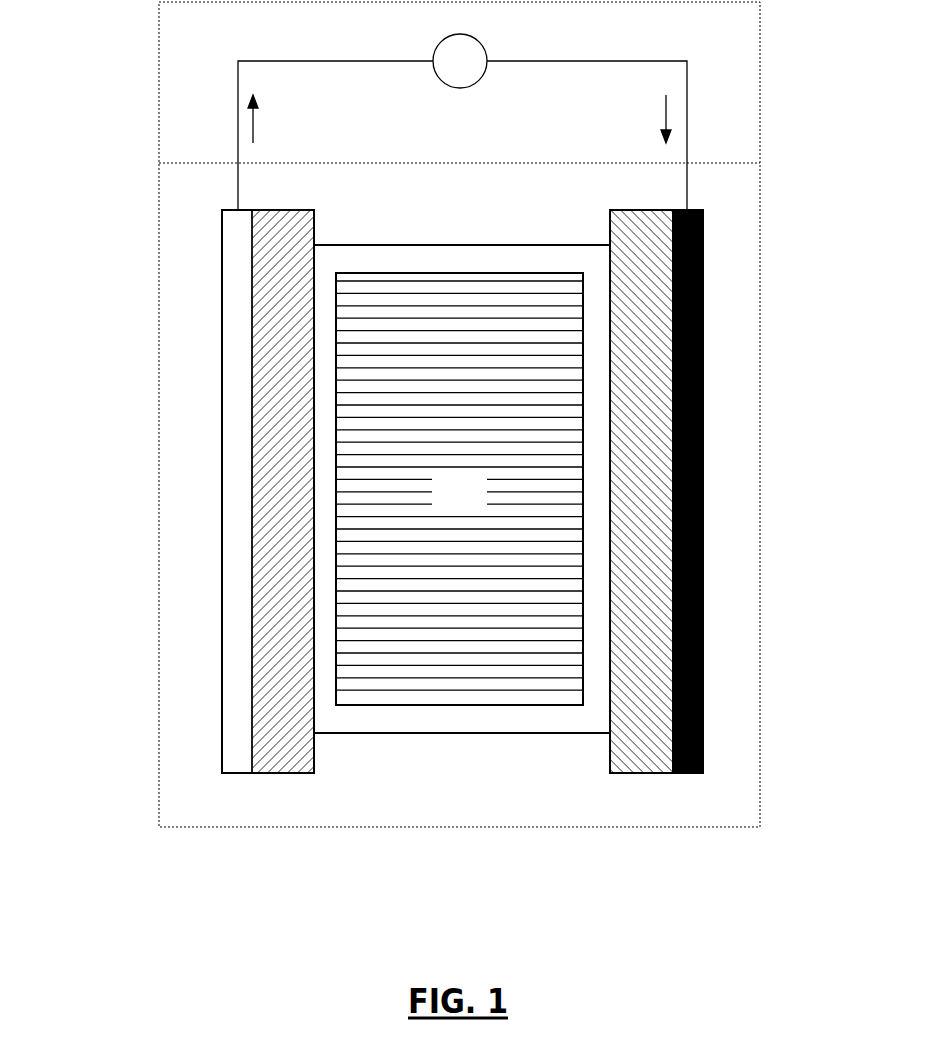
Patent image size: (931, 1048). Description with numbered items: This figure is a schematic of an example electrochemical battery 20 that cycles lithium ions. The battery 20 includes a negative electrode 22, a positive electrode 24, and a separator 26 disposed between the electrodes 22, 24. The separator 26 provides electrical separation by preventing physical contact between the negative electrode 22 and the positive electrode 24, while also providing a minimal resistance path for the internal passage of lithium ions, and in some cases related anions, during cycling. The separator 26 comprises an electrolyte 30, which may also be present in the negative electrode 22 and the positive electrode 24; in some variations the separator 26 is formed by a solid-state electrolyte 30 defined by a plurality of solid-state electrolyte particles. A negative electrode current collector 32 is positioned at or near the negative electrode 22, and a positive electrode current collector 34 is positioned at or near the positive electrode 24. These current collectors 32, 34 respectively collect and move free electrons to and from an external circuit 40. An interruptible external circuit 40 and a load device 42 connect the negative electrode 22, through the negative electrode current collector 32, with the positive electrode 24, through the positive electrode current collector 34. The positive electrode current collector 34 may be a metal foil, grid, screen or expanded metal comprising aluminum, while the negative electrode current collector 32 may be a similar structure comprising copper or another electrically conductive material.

The battery 20 is at (158, 243).
The negative electrode 22 is at (640, 773).
The positive electrode 24 is at (287, 773).
The separator 26 is at (462, 733).
The electrolyte 30 is at (459, 489).
The negative electrode current collector 32 is at (703, 490).
The positive electrode current collector 34 is at (222, 490).
The external circuit 40 is at (158, 82).
The load device 42 is at (462, 122).